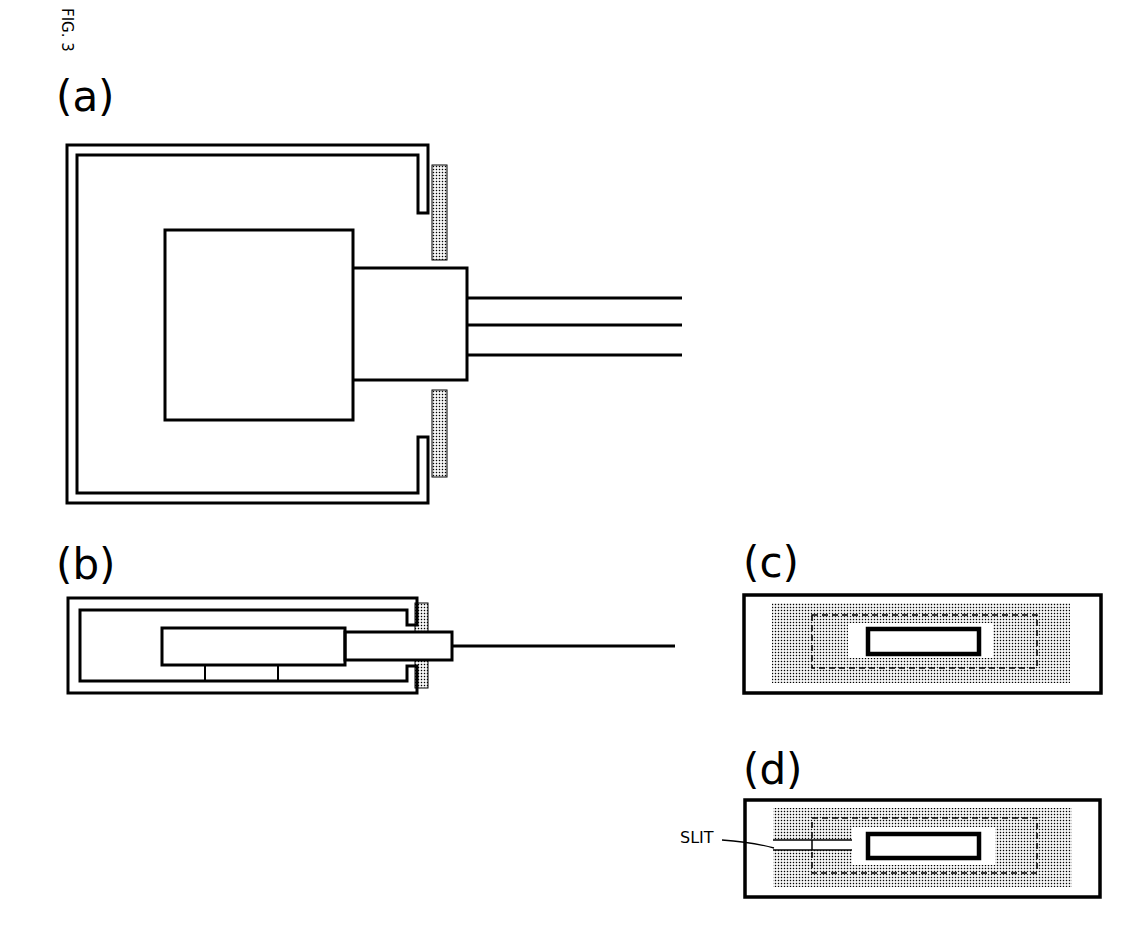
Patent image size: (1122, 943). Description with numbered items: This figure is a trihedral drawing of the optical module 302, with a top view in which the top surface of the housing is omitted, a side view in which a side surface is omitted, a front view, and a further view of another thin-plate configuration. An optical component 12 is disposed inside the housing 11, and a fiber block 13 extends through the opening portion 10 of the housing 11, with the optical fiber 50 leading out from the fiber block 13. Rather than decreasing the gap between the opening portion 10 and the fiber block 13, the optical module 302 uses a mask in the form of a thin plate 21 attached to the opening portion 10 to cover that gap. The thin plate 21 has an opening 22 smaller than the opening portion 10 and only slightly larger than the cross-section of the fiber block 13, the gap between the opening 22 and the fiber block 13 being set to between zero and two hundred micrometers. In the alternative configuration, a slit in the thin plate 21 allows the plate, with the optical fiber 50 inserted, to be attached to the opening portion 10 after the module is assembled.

The optical module 302 is at (452, 132).
The housing 11 is at (324, 144).
The optical component 12 is at (263, 230).
The fiber block 13 is at (470, 380).
The opening portion 10 is at (415, 212).
The thin plate 21 is at (448, 196).
The opening 22 is at (447, 260).
The optical fiber 50 is at (626, 356).